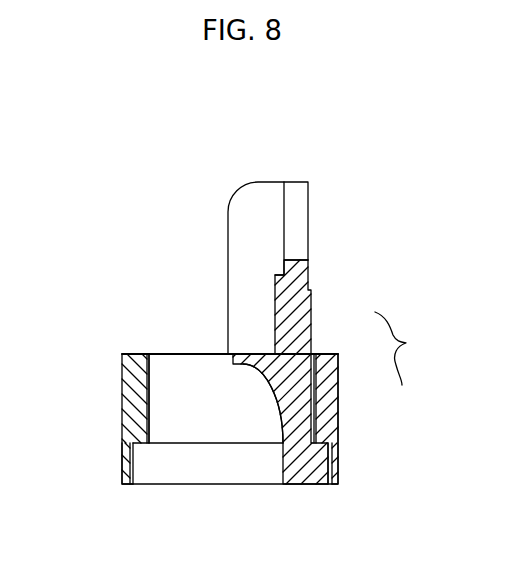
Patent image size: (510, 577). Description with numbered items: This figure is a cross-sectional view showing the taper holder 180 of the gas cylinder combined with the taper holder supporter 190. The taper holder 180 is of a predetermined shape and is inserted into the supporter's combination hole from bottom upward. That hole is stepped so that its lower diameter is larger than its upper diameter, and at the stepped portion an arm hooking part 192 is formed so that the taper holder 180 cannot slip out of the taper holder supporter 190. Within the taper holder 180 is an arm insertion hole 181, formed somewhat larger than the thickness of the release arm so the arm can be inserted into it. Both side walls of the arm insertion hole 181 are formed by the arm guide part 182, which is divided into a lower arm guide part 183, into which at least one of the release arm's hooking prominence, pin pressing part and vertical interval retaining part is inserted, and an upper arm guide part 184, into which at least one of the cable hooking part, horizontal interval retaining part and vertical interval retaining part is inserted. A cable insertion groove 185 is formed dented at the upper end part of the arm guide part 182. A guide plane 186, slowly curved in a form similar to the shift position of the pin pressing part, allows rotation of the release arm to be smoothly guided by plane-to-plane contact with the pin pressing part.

The taper holder 180 is at (332, 153).
The arm insertion hole 181 is at (195, 386).
The arm guide part 182 is at (407, 348).
The lower arm guide part 183 is at (313, 396).
The upper arm guide part 184 is at (297, 310).
The cable insertion groove 185 is at (300, 214).
The guide plane 186 is at (277, 405).
The taper holder supporter 190 is at (108, 330).
The arm hooking part 192 is at (124, 431).